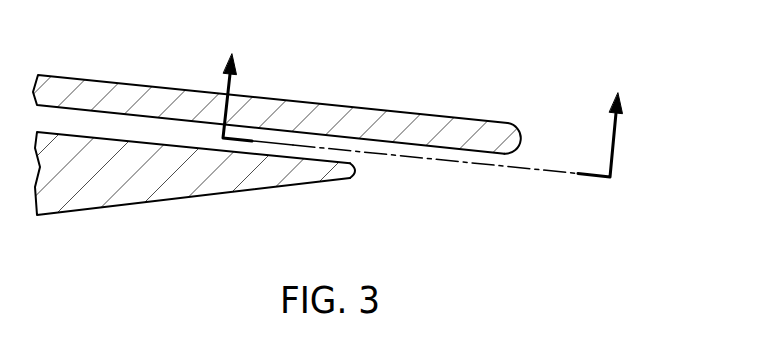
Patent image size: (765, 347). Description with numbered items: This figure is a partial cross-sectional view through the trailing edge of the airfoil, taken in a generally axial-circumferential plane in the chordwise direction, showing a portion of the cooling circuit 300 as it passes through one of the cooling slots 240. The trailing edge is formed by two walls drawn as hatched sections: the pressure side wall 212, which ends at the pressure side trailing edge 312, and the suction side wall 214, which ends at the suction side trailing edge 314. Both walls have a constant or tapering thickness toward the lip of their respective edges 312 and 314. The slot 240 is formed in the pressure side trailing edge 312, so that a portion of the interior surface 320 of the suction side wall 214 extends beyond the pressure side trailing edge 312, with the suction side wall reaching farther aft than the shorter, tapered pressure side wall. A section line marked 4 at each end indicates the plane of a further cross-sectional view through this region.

The cooling circuit 300 is at (311, 142).
The suction side wall 214 is at (311, 115).
The suction side trailing edge 314 is at (525, 138).
The pressure side wall 212 is at (210, 178).
The pressure side trailing edge 312 is at (352, 180).
The interior surface 320 is at (408, 165).
The cooling slot 240 is at (468, 177).
The section line 4- 4 is at (426, 97).